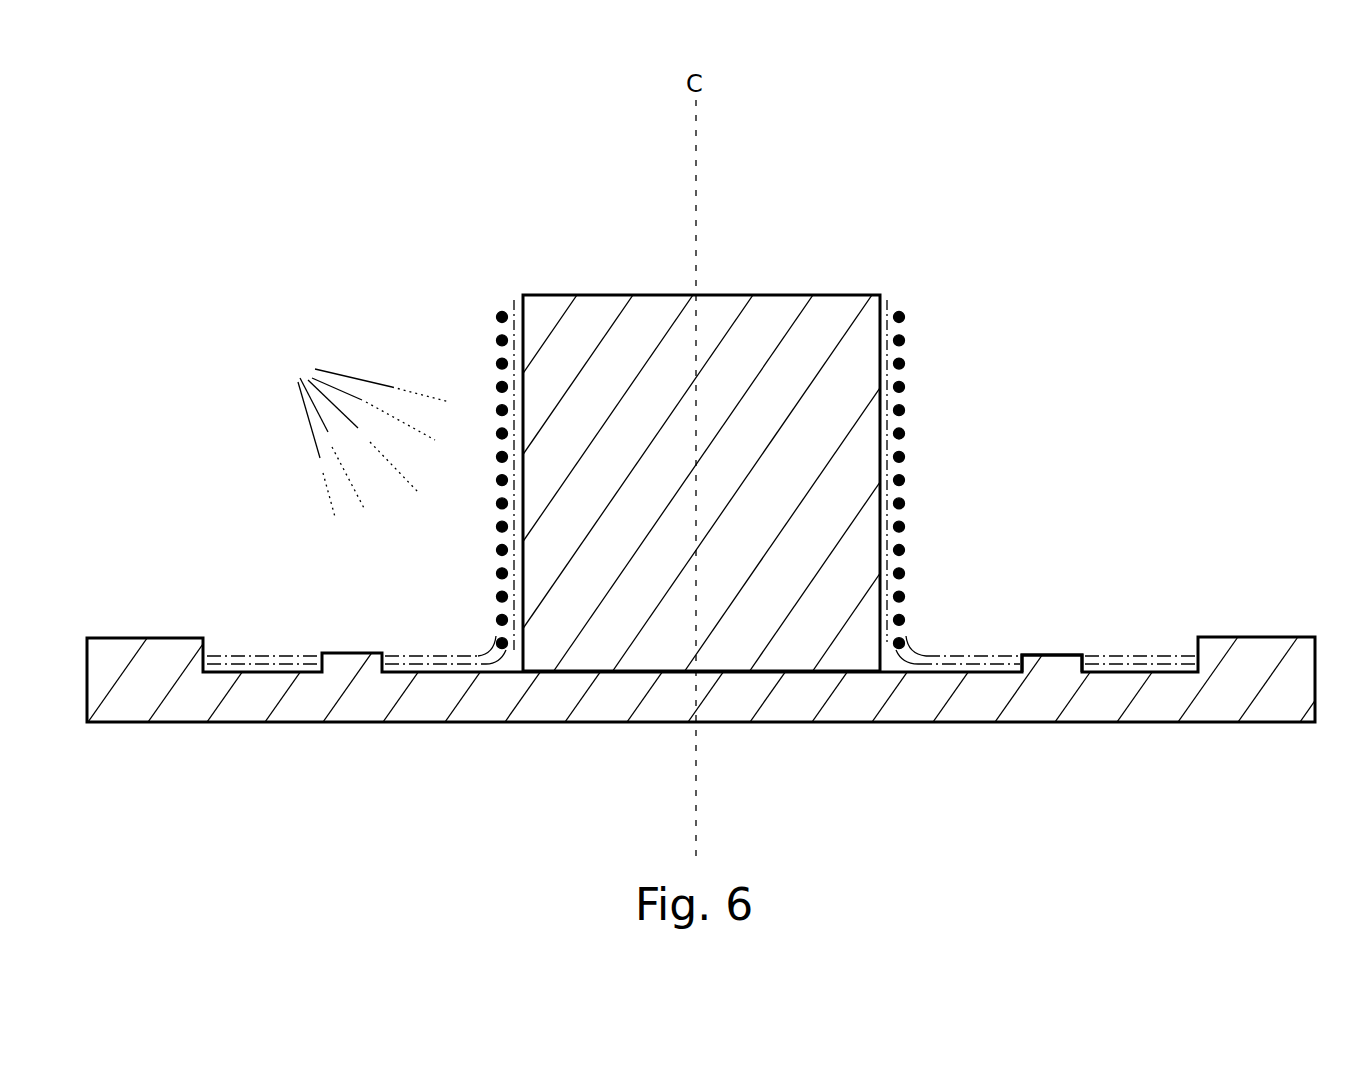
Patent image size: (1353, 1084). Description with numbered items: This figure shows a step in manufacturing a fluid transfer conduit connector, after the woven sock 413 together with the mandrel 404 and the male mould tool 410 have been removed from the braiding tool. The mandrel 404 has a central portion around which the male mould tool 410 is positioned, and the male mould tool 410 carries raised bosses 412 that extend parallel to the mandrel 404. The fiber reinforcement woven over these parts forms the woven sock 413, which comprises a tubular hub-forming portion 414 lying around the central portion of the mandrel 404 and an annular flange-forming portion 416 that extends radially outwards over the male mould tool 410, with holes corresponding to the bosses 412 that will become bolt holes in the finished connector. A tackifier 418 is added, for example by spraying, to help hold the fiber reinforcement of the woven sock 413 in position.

The mandrel 404 is at (808, 335).
The male mould tool 410 is at (918, 693).
The raised bosses 412 is at (1058, 662).
The woven sock 413 is at (933, 605).
The tubular hub-forming portion 414 is at (903, 437).
The annular flange-forming portion 416 is at (238, 660).
The tackifier 418 is at (409, 392).